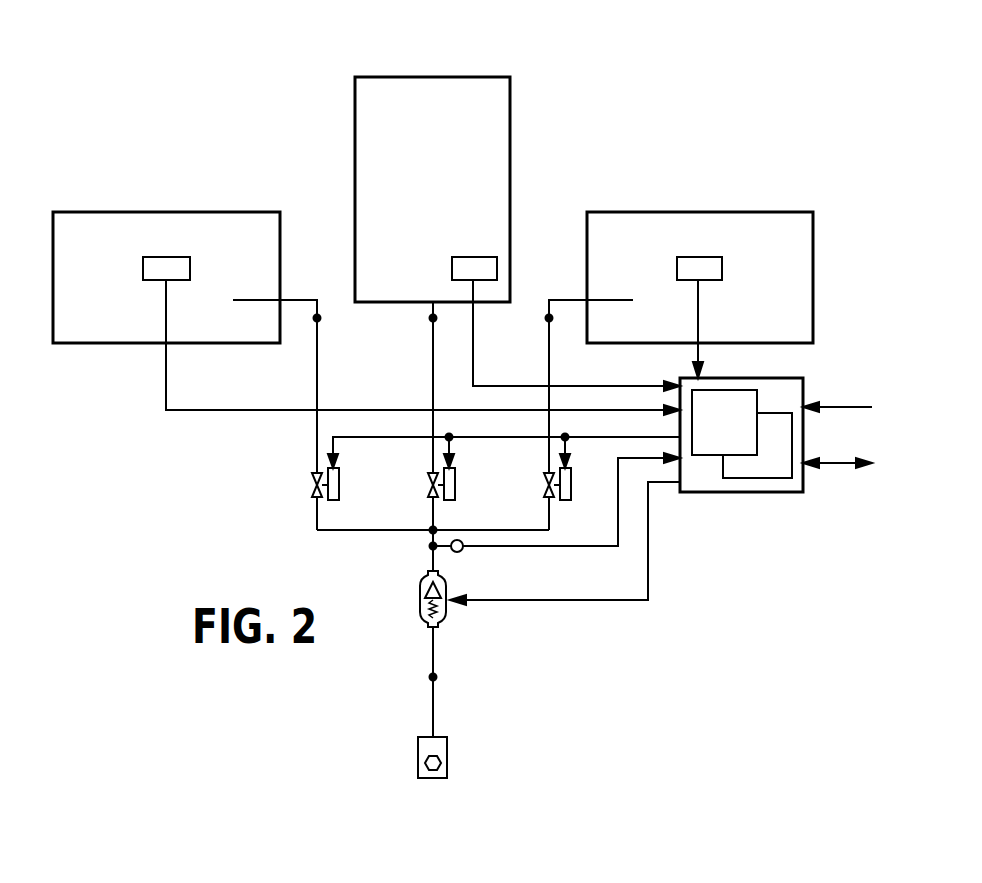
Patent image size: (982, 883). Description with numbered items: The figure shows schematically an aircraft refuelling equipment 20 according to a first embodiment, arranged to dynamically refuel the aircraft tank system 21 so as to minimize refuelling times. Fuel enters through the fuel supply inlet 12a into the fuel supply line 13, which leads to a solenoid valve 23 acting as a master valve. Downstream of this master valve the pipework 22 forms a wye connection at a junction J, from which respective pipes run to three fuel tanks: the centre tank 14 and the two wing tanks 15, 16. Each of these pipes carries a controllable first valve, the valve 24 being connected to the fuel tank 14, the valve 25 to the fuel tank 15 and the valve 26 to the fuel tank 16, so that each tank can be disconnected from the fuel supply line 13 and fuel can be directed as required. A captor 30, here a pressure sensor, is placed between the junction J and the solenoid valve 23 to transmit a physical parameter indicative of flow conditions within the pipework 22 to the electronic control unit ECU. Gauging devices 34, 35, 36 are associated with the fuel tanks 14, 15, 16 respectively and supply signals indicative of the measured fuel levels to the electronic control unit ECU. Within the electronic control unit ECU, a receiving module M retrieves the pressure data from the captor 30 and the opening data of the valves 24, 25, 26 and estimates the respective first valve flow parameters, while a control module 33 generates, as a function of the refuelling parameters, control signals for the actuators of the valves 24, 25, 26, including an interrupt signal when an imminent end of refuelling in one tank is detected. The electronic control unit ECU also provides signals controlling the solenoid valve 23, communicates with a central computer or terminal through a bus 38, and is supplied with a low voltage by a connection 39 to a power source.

The fuel supply inlet 12a is at (437, 765).
The fuel supply line 13 is at (432, 697).
The centre tank 14 is at (390, 75).
The wing tank 15 is at (83, 212).
The wing tank 16 is at (775, 212).
The equipment 20 is at (699, 585).
The aircraft tank system 21 is at (640, 129).
The pipework 22 is at (300, 298).
The solenoid valve 23 is at (418, 607).
The valve 24 is at (414, 482).
The valve 25 is at (300, 489).
The valve 26 is at (529, 482).
The captor 30 is at (460, 552).
The control module 33 is at (700, 455).
The gauging device 34 is at (467, 255).
The gauging device 35 is at (165, 257).
The gauging device 36 is at (702, 257).
The bus 38 is at (840, 465).
The connection 39 is at (848, 405).
The junction J is at (430, 538).
The receiving module M is at (738, 480).
The electronic control unit ECU is at (772, 492).